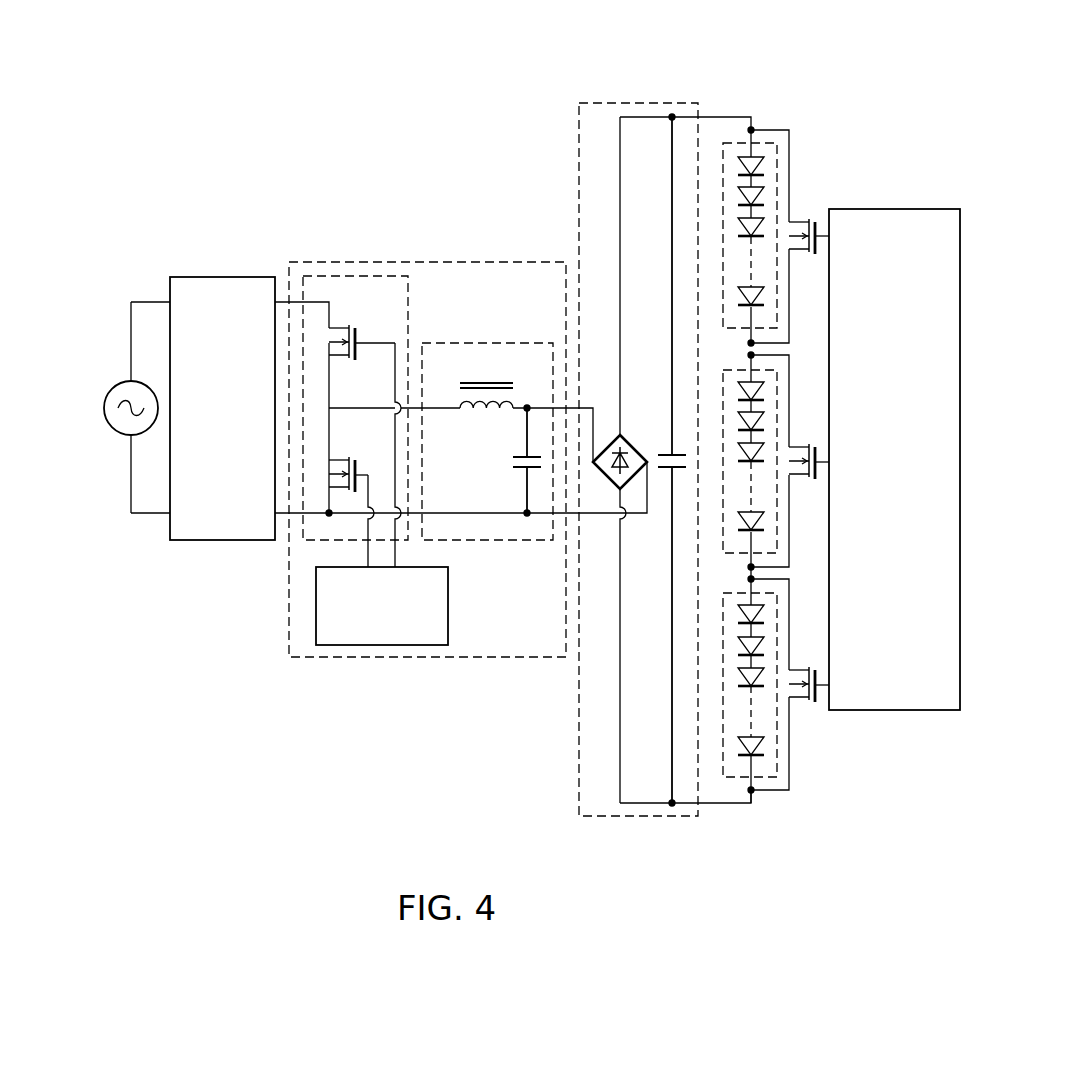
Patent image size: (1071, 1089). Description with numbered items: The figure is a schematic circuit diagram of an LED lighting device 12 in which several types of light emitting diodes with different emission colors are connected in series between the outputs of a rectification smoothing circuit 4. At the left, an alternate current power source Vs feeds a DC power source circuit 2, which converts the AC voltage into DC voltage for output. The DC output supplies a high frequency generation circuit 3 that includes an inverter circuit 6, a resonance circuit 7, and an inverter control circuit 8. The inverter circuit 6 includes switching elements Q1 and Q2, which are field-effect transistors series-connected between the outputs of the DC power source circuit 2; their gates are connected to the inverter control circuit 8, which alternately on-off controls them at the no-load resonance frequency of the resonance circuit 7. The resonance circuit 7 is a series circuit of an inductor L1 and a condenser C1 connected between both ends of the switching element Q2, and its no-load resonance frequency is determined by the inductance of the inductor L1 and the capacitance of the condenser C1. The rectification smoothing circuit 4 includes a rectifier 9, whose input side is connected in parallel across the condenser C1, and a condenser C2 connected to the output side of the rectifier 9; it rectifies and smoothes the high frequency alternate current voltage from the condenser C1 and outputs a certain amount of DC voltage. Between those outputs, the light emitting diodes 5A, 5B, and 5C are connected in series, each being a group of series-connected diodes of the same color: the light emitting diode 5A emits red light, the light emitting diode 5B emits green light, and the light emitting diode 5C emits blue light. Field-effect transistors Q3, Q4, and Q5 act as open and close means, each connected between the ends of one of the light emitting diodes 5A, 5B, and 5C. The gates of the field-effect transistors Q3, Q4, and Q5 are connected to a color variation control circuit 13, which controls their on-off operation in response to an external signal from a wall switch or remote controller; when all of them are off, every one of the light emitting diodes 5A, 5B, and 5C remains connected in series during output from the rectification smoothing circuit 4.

The DC power source circuit 2 is at (226, 277).
The high frequency generation circuit 3 is at (300, 262).
The rectification smoothing circuit 4 is at (594, 103).
The light emitting diode 5A is at (768, 143).
The light emitting diode 5B is at (777, 538).
The light emitting diode 5C is at (768, 777).
The inverter circuit 6 is at (389, 276).
The resonance circuit 7 is at (485, 343).
The inverter control circuit 8 is at (385, 645).
The rectifier 9 is at (612, 441).
The LED lighting device 12 is at (407, 192).
The color variation control circuit 13 is at (895, 209).
The switching element Q1 is at (345, 326).
The switching element Q2 is at (342, 491).
The field-effect transistor Q3 is at (800, 221).
The field-effect transistor Q4 is at (800, 446).
The field-effect transistor Q5 is at (796, 699).
The inductor L1 is at (462, 383).
The condenser C1 is at (520, 470).
The condenser C2 is at (665, 456).
The alternate current power source Vs is at (118, 385).